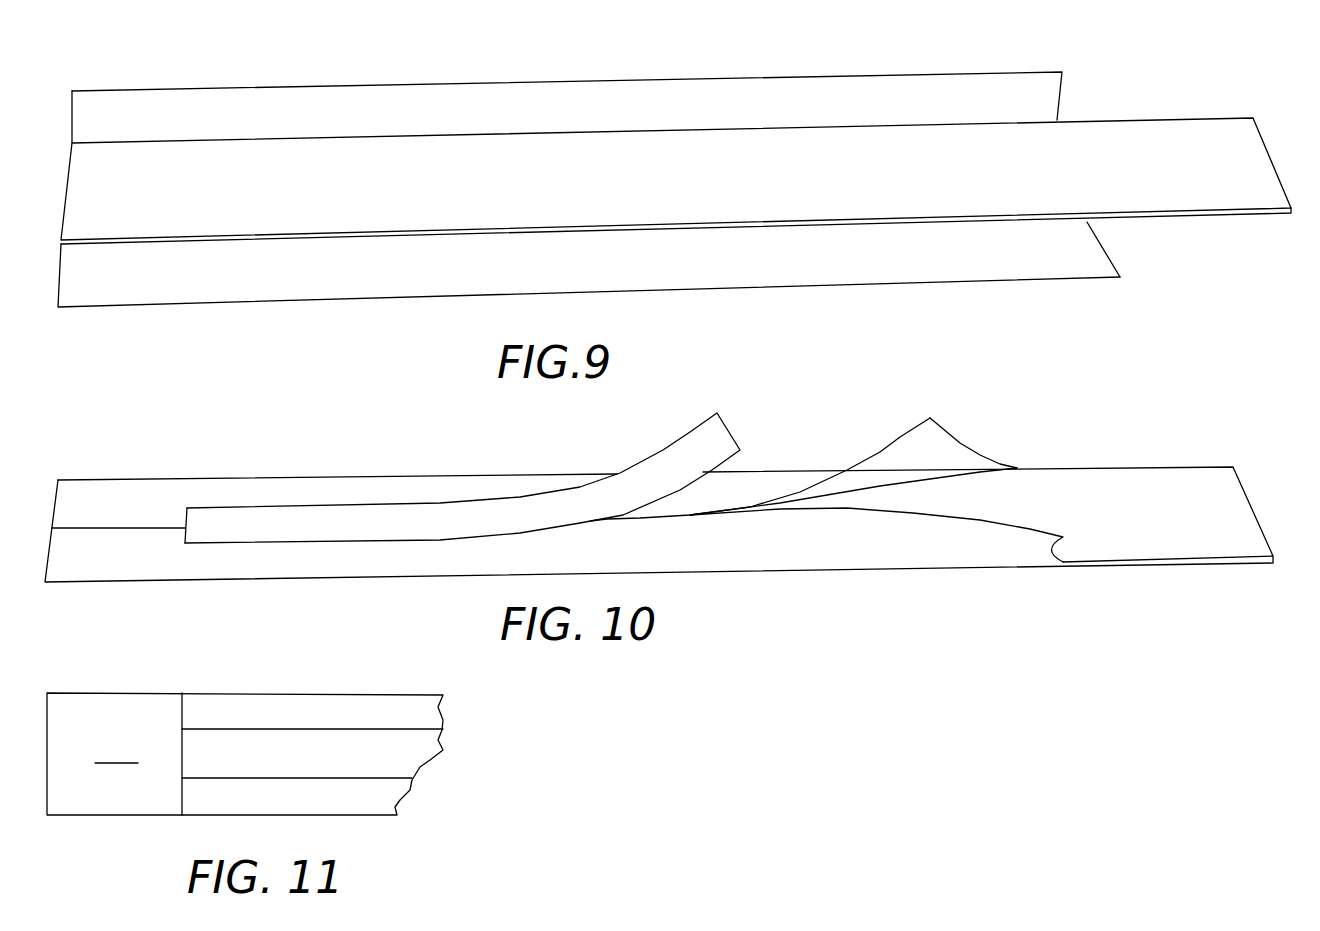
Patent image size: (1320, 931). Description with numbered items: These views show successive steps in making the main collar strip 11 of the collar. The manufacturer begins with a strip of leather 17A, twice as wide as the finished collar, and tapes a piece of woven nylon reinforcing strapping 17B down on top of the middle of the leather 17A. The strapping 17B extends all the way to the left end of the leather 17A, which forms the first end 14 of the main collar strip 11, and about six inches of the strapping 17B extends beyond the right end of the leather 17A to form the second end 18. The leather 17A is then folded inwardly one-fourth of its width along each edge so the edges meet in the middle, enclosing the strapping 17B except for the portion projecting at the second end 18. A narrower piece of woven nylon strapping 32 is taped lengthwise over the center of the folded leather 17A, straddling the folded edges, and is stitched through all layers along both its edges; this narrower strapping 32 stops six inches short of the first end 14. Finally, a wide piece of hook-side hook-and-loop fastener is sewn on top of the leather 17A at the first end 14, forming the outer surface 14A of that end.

In FIG. 10, the main collar strip 11 is at (659, 527).
In FIG. 9, the first end 14 is at (100, 318).
In FIG. 10, the first end 14 is at (110, 585).
In FIG. 11, the first end 14 is at (245, 796).
In FIG. 11, the outer surface 14A is at (93, 822).
In FIG. 9, the strip of leather 17A is at (589, 214).
In FIG. 10, the strip of leather 17A is at (858, 547).
In FIG. 11, the strip of leather 17A is at (345, 695).
In FIG. 9, the reinforcing strapping 17B is at (676, 183).
In FIG. 10, the reinforcing strapping 17B is at (981, 553).
In FIG. 9, the second end 18 is at (1190, 222).
In FIG. 10, the second end 18 is at (1200, 573).
In FIG. 10, the narrower reinforcing strapping 32 is at (702, 443).
In FIG. 11, the narrower reinforcing strapping 32 is at (403, 757).